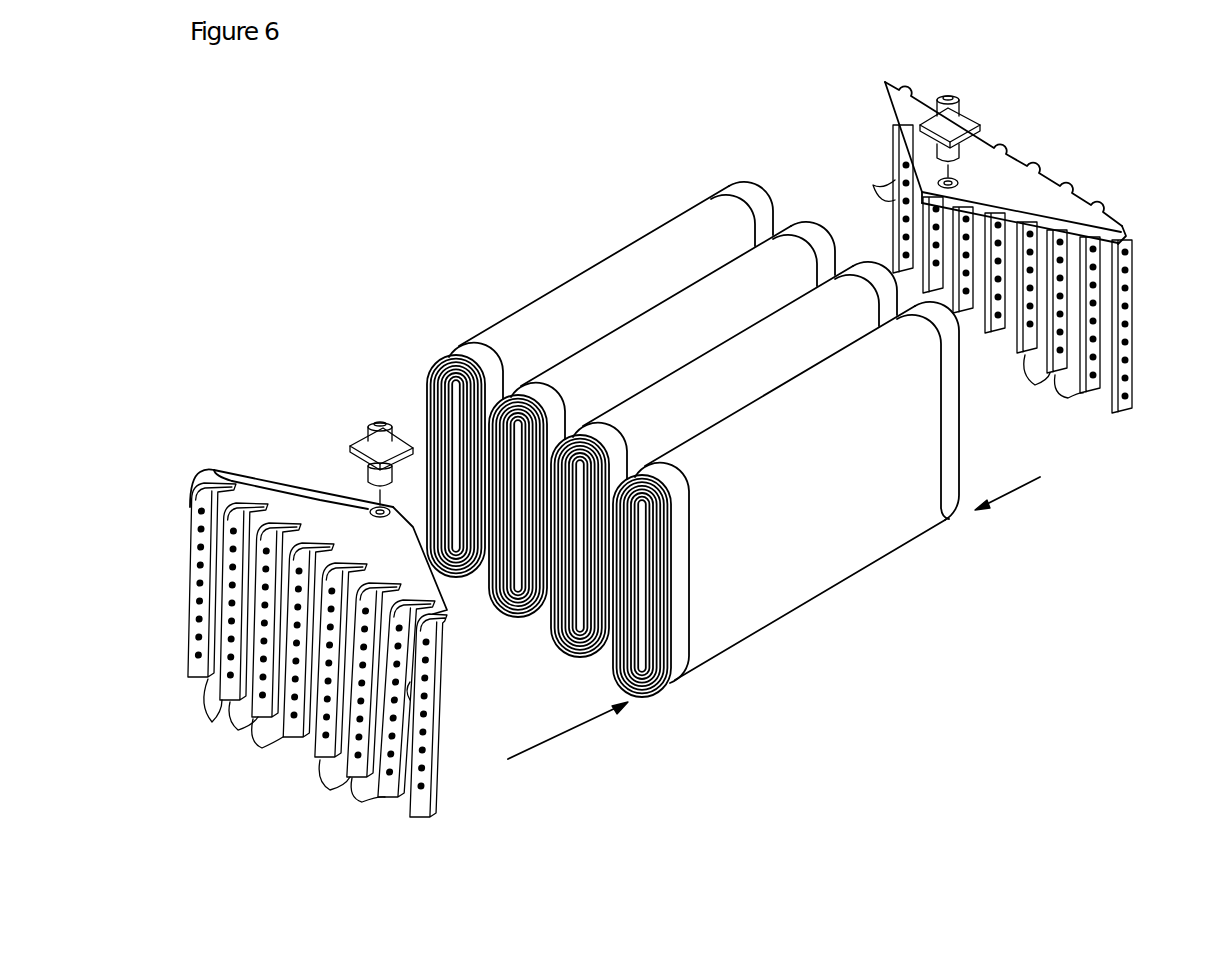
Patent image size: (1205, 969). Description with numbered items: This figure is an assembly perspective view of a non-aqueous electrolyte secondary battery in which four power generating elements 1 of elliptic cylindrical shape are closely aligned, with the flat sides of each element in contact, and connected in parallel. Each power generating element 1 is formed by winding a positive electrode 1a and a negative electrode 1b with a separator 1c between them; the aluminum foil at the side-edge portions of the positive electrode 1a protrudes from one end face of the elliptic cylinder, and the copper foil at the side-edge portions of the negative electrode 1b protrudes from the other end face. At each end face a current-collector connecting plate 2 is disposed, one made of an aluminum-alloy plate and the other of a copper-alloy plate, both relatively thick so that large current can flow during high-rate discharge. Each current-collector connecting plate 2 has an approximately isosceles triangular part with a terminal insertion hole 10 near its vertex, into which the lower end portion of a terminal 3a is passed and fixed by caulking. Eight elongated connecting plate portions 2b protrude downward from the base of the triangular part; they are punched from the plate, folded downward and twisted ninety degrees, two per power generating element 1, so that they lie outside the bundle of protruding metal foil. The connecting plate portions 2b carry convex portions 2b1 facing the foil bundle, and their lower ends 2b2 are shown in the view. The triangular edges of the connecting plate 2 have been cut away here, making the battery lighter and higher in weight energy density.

The power generating element 1 is at (710, 449).
The positive electrode 1a is at (684, 590).
The negative electrode 1b is at (945, 437).
The separator 1c is at (795, 501).
The current-collector connecting plate 2 is at (290, 480).
The connecting plate portion 2b is at (436, 771).
The convex portion 2b1 is at (402, 702).
The fin bent end 2b2 is at (637, 600).
The terminal 3a is at (362, 438).
The terminal insertion hole 10 is at (652, 463).